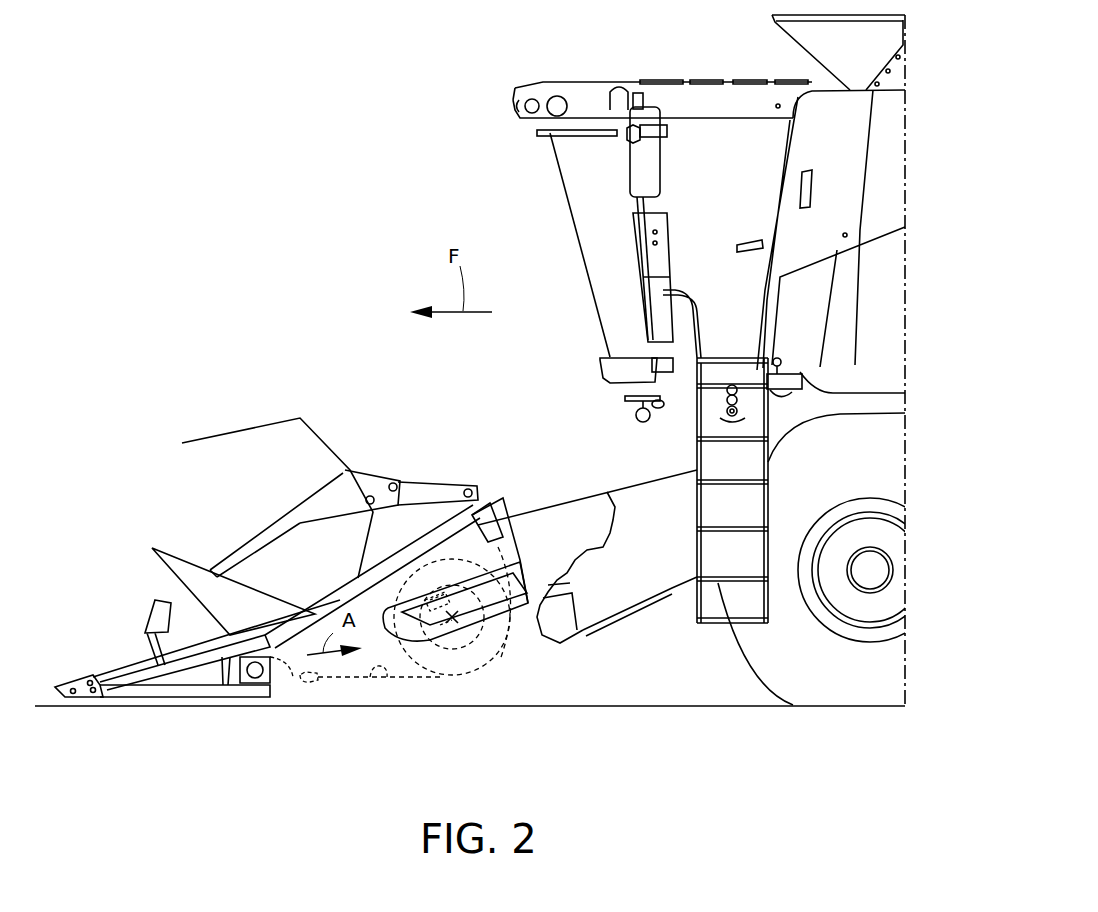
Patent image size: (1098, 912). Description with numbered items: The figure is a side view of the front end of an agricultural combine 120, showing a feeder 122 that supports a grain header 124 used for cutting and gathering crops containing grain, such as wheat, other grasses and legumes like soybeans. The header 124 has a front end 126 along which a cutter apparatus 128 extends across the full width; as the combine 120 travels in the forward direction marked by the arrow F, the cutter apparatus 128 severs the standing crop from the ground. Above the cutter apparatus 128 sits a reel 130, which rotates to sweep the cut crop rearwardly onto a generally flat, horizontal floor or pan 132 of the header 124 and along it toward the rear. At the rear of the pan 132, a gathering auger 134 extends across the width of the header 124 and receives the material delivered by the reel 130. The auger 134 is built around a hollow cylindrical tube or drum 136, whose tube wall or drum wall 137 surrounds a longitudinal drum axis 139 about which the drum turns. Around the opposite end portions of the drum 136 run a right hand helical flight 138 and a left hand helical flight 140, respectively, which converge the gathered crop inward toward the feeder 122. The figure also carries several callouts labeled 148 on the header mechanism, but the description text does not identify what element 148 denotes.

The agricultural combine 120 is at (987, 83).
The feeder 122 is at (577, 500).
The grain header 124 is at (543, 655).
The front end 126 is at (320, 682).
The cutter apparatus 128 is at (298, 684).
The reel 130 is at (277, 418).
The pan 132 is at (390, 673).
The gathering auger 134 is at (490, 650).
The drum 136 is at (503, 640).
The drum wall 137 is at (508, 643).
The right hand helical flight 138 is at (468, 648).
The left hand helical flight 140 is at (480, 691).
The drum axis 139 is at (452, 613).
The knife section 148 is at (443, 577).